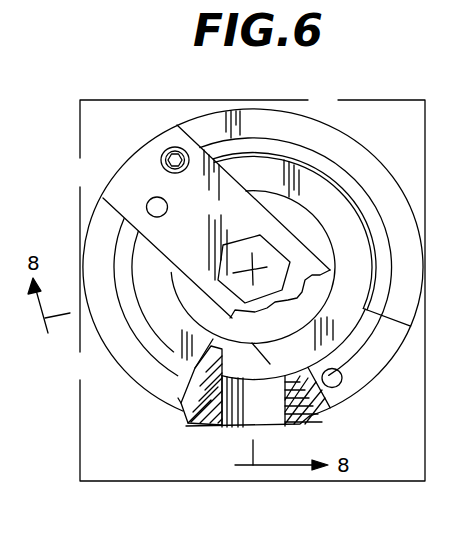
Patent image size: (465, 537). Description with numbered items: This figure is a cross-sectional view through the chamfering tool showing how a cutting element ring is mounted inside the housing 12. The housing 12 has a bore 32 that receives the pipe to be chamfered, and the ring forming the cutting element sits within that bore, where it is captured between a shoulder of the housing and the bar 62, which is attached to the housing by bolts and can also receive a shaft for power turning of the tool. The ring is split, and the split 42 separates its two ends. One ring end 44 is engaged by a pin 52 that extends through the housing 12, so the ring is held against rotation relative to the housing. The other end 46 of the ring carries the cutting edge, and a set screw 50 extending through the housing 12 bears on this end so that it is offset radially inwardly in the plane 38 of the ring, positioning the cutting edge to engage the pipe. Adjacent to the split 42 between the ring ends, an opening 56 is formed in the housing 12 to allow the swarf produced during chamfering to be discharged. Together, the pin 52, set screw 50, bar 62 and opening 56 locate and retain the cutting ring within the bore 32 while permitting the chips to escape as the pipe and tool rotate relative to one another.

The housing 12 is at (112, 342).
The bore 32 is at (288, 156).
The plane 38 is at (362, 116).
The split 42 is at (182, 403).
The ring end 44 is at (180, 353).
The other end 46 is at (312, 373).
The set screw 50 is at (308, 418).
The pin 52 is at (190, 413).
The opening 56 is at (228, 427).
The bar 62 is at (140, 173).